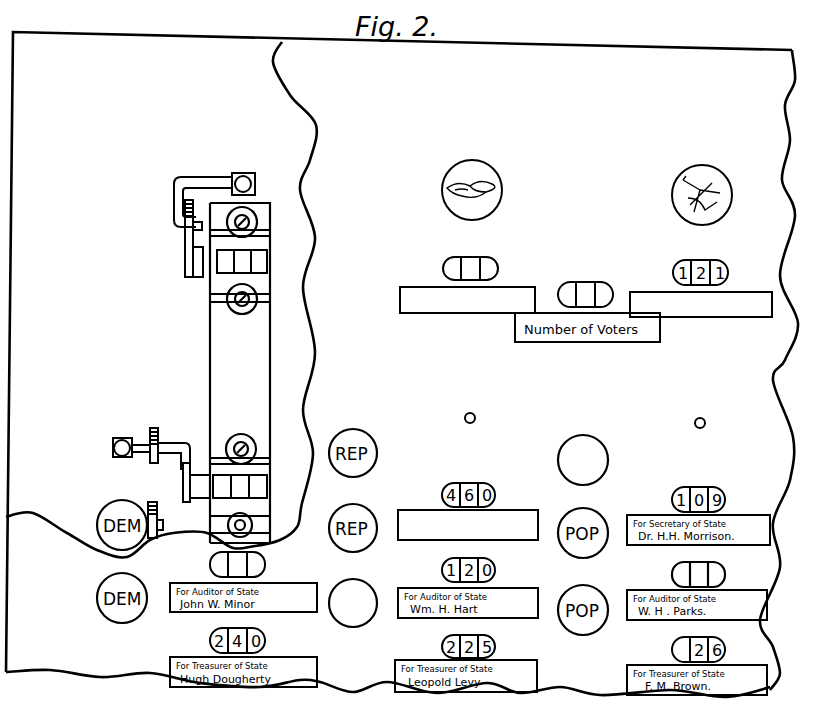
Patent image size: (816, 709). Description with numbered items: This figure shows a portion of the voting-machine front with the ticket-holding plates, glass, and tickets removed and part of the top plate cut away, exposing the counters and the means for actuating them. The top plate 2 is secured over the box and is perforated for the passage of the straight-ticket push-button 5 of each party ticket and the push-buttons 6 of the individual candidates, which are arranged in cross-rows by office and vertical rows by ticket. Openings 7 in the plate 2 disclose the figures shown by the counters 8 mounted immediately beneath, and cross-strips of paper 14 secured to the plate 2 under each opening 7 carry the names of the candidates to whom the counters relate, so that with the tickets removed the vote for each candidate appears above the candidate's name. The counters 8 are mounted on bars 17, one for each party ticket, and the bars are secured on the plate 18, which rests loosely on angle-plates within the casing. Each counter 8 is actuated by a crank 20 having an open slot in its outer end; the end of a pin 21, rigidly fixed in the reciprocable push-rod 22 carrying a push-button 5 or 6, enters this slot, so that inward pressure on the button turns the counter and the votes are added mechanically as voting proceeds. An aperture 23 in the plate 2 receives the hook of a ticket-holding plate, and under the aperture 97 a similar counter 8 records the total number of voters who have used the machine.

The plate 2 is at (454, 298).
The straight-ticket push-button 5 is at (502, 183).
The push-button 6 is at (591, 436).
The opening 7 is at (467, 281).
The counter 8 is at (218, 279).
The cross-strip of paper 14 is at (745, 317).
The bar 17 is at (240, 373).
The plate 18 is at (214, 387).
The crank 20 is at (185, 241).
The pin 21 is at (204, 182).
The push-rod 22 is at (241, 176).
The aperture 23 is at (473, 414).
The aperture 97 is at (598, 283).